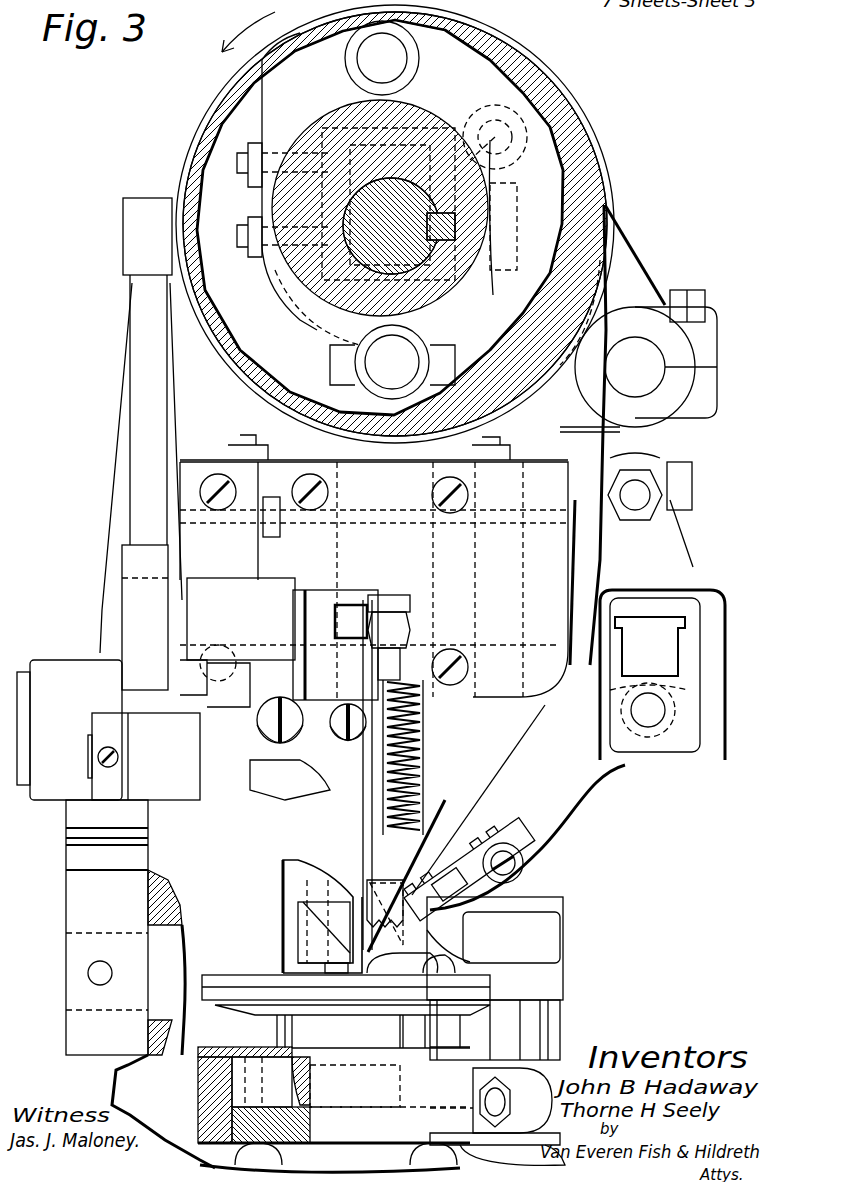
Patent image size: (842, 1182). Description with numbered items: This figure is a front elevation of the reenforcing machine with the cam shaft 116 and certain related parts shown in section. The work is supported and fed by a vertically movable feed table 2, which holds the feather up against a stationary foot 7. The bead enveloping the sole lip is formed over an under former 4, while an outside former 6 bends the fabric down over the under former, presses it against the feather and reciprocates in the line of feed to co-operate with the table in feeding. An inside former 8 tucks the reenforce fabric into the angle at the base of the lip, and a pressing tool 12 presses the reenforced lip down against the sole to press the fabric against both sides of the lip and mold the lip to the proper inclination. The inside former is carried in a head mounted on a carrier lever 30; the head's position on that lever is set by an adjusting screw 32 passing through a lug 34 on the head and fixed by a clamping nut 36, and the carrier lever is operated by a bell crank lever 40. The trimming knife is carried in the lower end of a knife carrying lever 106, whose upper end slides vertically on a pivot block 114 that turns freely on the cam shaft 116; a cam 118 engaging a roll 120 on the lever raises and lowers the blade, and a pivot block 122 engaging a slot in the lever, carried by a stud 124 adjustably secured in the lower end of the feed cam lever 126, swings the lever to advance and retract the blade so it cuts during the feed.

The feed table 2 is at (228, 983).
The under former 4 is at (422, 960).
The outside former 6 is at (373, 893).
The stationary foot 7 is at (350, 890).
The inside former 8 is at (352, 918).
The pressing tool 12 is at (312, 952).
The carrier lever 30 is at (222, 585).
The adjusting screw 32 is at (262, 705).
The lug 34 is at (282, 777).
The clamping nut 36 is at (392, 603).
The bell crank lever 40 is at (133, 410).
The knife carrying lever 106 is at (562, 812).
The pivot block 114 is at (530, 115).
The cam shaft 116 is at (383, 178).
The cam 118 is at (514, 68).
The roll 120 is at (432, 52).
The pivot block 122 is at (673, 687).
The stud 124 is at (663, 711).
The feed cam lever 126 is at (676, 453).